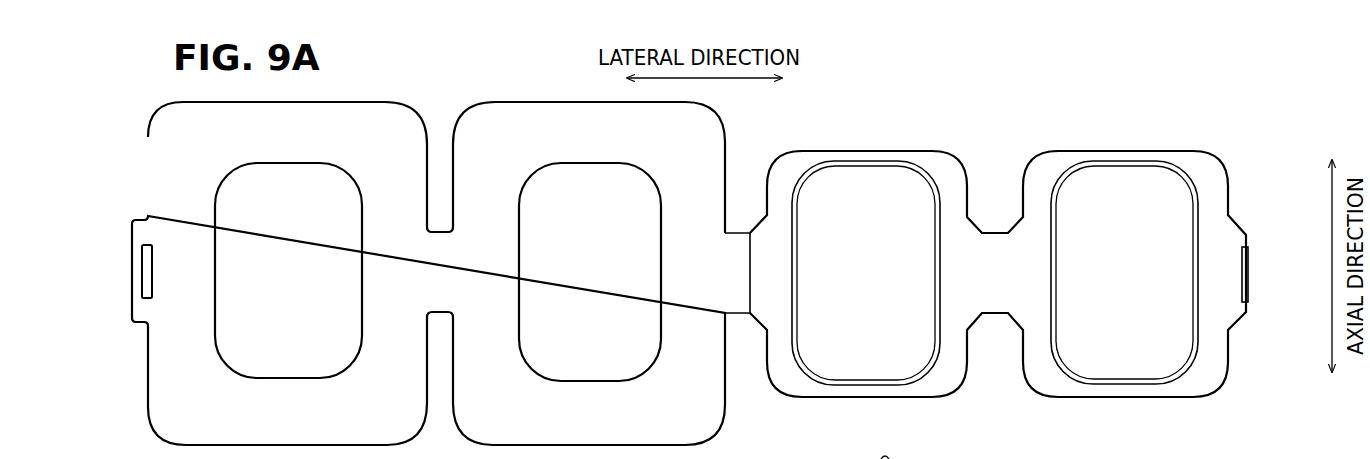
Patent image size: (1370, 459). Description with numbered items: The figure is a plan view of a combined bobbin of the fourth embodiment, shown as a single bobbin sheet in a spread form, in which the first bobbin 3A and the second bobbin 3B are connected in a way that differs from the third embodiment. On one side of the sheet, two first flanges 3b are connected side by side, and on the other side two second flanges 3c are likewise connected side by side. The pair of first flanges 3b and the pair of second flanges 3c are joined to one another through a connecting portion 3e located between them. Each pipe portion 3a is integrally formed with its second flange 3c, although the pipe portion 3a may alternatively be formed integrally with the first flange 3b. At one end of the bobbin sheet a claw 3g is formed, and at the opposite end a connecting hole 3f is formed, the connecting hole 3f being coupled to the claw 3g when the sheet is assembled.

The second bobbin 3B is at (690, 255).
The first bobbin 3A is at (1027, 234).
The pipe portion 3a is at (862, 162).
The first flange 3b is at (379, 125).
The second flange 3c is at (953, 180).
The connecting portion 3e is at (735, 250).
The connecting hole 3f is at (143, 283).
The claw 3g is at (1247, 283).